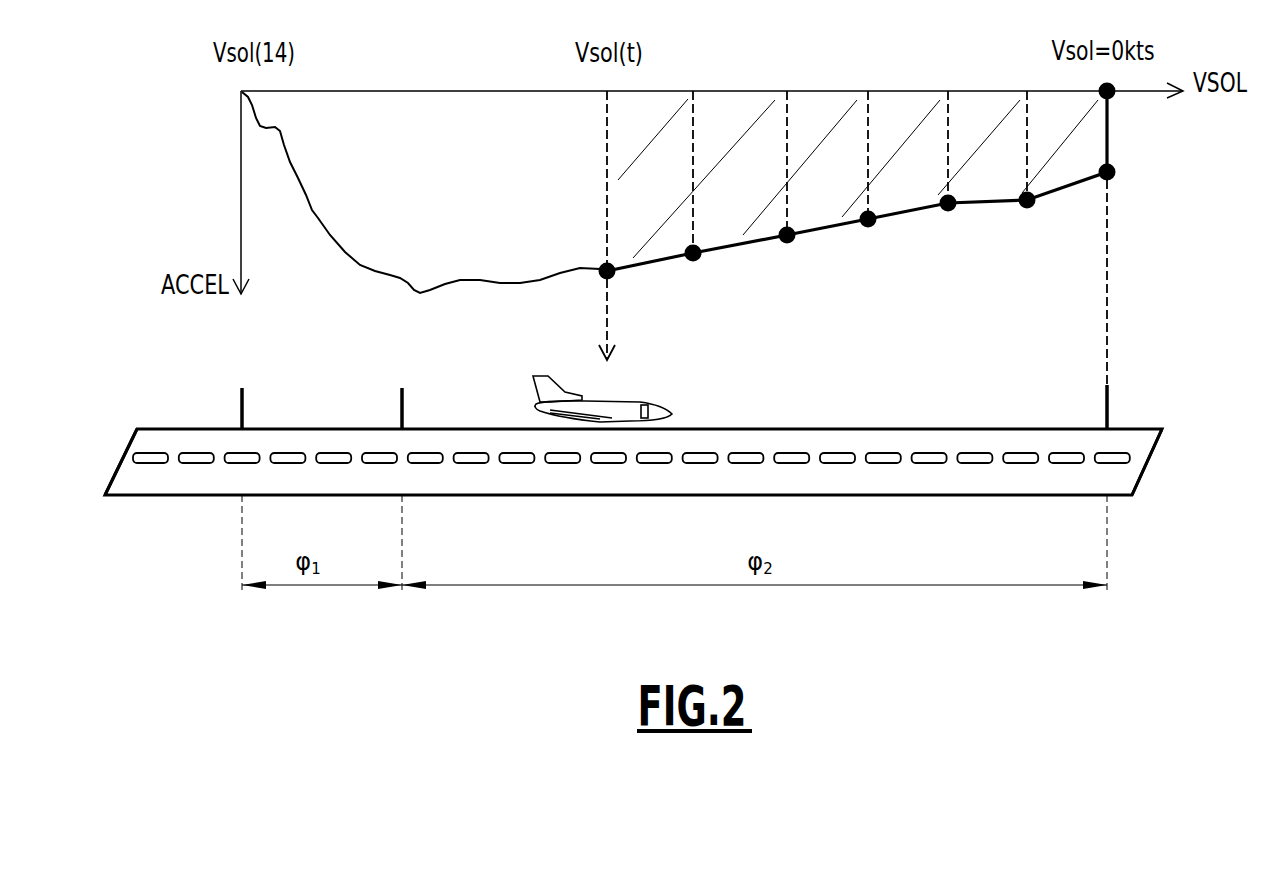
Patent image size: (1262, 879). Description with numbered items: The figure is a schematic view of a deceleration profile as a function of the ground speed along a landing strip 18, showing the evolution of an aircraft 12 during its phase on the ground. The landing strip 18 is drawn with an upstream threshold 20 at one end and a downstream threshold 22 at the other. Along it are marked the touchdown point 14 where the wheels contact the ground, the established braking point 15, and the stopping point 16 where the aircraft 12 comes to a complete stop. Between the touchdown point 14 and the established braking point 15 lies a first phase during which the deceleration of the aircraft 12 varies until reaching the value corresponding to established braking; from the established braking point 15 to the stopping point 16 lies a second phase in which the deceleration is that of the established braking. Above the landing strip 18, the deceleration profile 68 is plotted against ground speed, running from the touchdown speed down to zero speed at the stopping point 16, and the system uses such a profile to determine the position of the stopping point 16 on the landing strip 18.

The aircraft 12 is at (632, 403).
The touchdown point 14 is at (242, 388).
The established braking point 15 is at (402, 388).
The stopping point 16 is at (1110, 400).
The landing strip 18 is at (848, 428).
The upstream threshold 20 is at (122, 458).
The downstream threshold 22 is at (1150, 455).
The second deceleration profile 68 is at (373, 267).